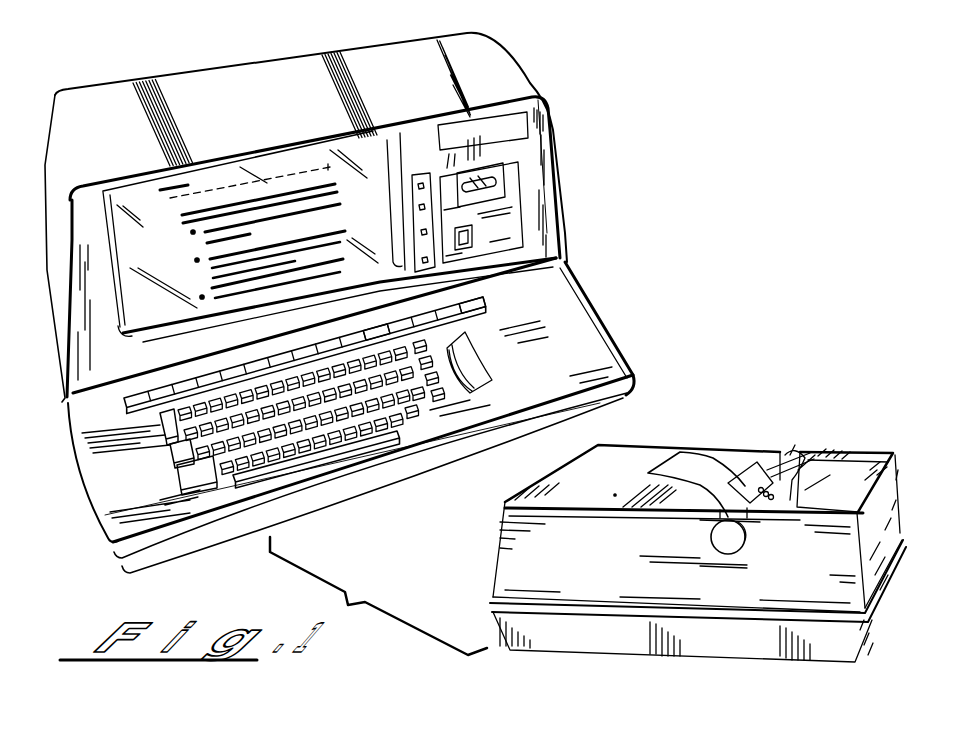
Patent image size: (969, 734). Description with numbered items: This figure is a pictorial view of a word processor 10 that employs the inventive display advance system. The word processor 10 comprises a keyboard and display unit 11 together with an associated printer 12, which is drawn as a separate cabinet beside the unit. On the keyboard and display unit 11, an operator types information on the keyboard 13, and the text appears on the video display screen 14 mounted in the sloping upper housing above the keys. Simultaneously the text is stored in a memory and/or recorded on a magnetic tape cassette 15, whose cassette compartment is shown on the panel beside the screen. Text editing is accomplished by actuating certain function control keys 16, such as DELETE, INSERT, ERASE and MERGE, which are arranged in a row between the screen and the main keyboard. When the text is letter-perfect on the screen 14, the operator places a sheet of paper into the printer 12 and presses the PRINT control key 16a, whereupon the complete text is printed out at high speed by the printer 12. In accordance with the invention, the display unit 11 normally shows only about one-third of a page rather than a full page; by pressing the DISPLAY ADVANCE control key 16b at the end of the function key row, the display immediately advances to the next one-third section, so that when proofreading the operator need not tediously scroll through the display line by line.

The word processor 10 is at (325, 340).
The keyboard and display unit 11 is at (326, 214).
The printer 12 is at (563, 665).
The keyboard 13 is at (204, 444).
The video display screen 14 is at (178, 253).
The magnetic tape cassette 15 is at (505, 217).
The function control keys 16 is at (301, 364).
The PRINT control key 16a is at (380, 318).
The DISPLAY ADVANCE control key 16b is at (470, 294).